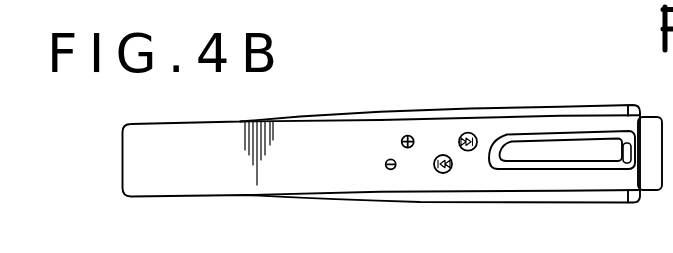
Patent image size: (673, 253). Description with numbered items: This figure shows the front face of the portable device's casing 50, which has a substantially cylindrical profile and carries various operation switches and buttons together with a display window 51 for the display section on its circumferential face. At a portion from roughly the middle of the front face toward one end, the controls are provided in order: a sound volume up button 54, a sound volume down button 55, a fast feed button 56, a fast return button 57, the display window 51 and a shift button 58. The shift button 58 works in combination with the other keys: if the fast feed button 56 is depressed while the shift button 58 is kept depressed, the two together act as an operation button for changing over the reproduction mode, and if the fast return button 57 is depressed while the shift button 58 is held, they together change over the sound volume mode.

The casing 50 is at (197, 187).
The display window 51 is at (530, 153).
The sound volume up button 54 is at (408, 135).
The sound volume down button 55 is at (391, 170).
The fast feed button 56 is at (473, 132).
The fast return button 57 is at (443, 173).
The shift button 58 is at (627, 158).